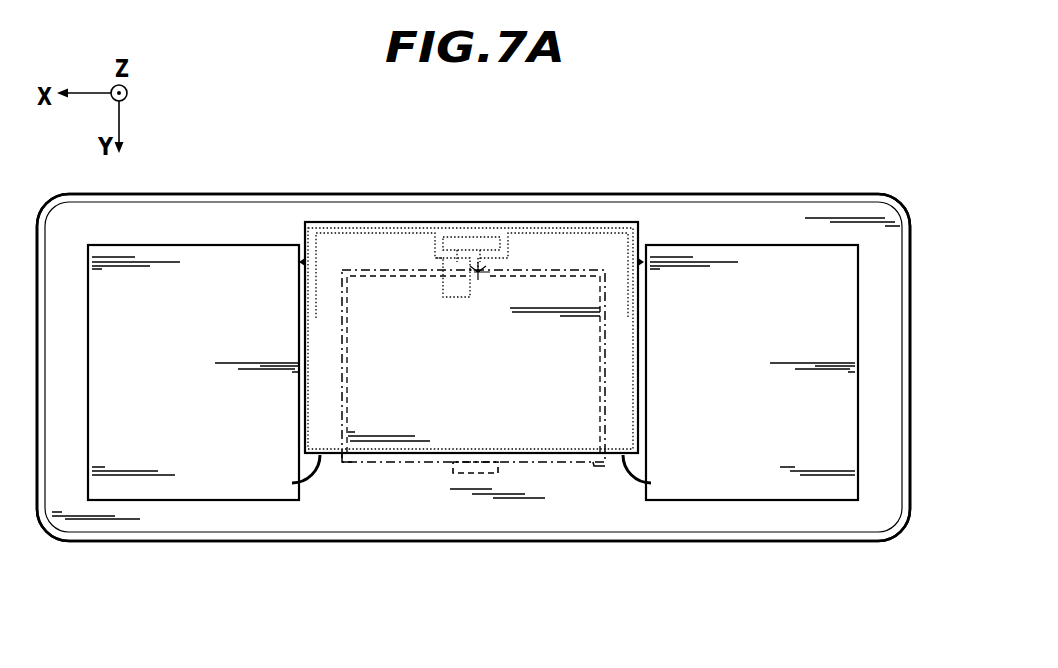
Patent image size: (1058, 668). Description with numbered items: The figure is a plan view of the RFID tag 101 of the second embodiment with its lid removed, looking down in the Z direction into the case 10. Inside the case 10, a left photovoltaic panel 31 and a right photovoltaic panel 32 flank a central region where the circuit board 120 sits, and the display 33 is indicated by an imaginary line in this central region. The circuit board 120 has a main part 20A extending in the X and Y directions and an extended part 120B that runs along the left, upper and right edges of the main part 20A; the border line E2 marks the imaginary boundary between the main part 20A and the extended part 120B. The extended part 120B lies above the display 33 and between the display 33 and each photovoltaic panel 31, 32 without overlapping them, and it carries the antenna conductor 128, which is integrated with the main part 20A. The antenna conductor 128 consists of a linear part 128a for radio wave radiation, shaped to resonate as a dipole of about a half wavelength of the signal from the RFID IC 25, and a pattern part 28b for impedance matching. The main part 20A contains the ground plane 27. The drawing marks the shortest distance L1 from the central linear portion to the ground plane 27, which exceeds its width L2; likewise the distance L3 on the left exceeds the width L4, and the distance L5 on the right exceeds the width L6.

The case 10 is at (873, 505).
The RFID tag 101 is at (210, 160).
The photovoltaic panel 31 is at (152, 487).
The photovoltaic panel 32 is at (771, 480).
The extended part 120B is at (638, 222).
The antenna conductor 128 is at (470, 267).
The linear part 128a is at (400, 232).
The pattern part 28b is at (460, 237).
The circuit board 120 is at (501, 351).
The main part 20A is at (527, 270).
The ground plane 27 is at (457, 415).
The RFID IC 25 is at (478, 268).
The display 33 is at (594, 464).
The border line E2 is at (340, 455).
The shortest distance L1 is at (395, 233).
The width L2 is at (375, 282).
The shortest distance L3 is at (318, 308).
The width L4 is at (332, 282).
The shortest distance L5 is at (628, 308).
The width L6 is at (612, 282).